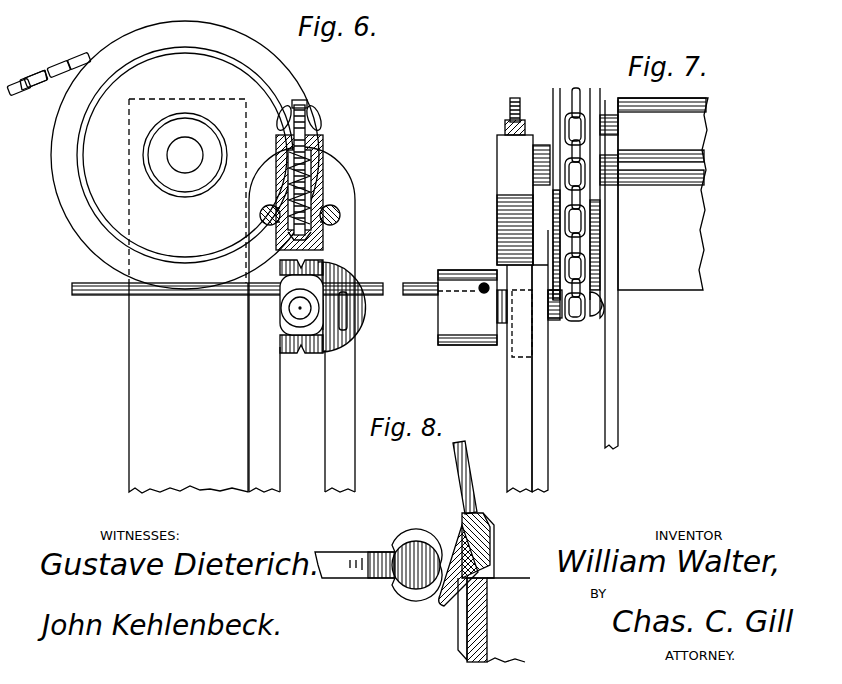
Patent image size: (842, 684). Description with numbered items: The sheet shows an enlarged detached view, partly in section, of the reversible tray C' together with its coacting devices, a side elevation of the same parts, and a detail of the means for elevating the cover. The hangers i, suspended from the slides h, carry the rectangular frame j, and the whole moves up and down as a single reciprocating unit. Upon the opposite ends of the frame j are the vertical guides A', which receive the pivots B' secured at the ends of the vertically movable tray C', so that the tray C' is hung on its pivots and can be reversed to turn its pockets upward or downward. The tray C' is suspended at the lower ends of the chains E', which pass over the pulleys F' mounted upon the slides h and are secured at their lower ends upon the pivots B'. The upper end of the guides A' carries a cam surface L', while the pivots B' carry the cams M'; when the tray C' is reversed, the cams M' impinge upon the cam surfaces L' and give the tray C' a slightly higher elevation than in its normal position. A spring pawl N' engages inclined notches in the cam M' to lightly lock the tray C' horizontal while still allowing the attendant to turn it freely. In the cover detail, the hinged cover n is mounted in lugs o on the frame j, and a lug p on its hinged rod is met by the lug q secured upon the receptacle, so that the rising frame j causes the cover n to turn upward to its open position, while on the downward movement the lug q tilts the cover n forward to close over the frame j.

In FIG. 6, the chains E' is at (49, 70).
In FIG. 7, the chains E' is at (576, 188).
In FIG. 6, the pulleys F' is at (185, 155).
In FIG. 7, the pulleys F' is at (609, 133).
In FIG. 6, the vertically movable tray C' is at (227, 299).
In FIG. 7, the vertically movable tray C' is at (423, 265).
In FIG. 6, the hangers i is at (188, 388).
In FIG. 7, the hangers i is at (617, 274).
In FIG. 6, the spring pawl N' is at (305, 176).
In FIG. 7, the spring pawl N' is at (510, 181).
In FIG. 6, the pivots B' is at (290, 313).
In FIG. 7, the pivots B' is at (561, 324).
In FIG. 6, the cams M' is at (364, 315).
In FIG. 7, the cams M' is at (472, 324).
In FIG. 6, the cam surface L' is at (348, 308).
In FIG. 6, the vertical guides A' is at (302, 319).
In FIG. 7, the vertical guides A' is at (516, 361).
In FIG. 7, the slides h is at (663, 194).
In FIG. 8, the hinged cover n is at (462, 482).
In FIG. 8, the lugs o is at (491, 525).
In FIG. 8, the lug p is at (438, 605).
In FIG. 8, the lug q is at (366, 580).
In FIG. 8, the rectangular frame j is at (489, 600).